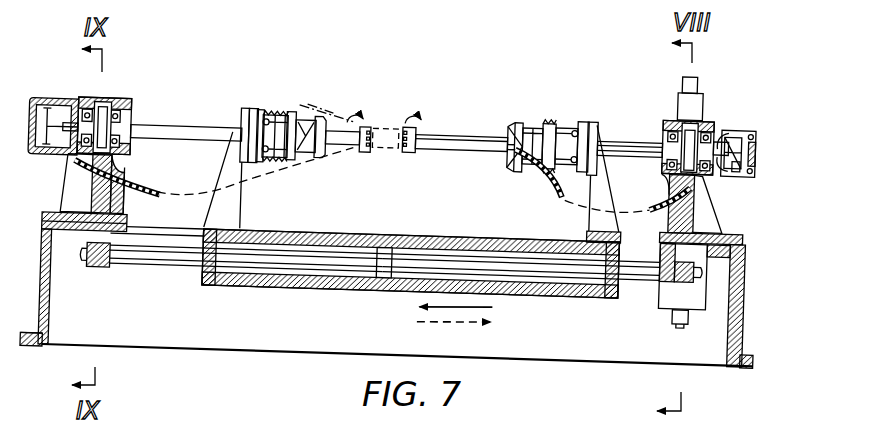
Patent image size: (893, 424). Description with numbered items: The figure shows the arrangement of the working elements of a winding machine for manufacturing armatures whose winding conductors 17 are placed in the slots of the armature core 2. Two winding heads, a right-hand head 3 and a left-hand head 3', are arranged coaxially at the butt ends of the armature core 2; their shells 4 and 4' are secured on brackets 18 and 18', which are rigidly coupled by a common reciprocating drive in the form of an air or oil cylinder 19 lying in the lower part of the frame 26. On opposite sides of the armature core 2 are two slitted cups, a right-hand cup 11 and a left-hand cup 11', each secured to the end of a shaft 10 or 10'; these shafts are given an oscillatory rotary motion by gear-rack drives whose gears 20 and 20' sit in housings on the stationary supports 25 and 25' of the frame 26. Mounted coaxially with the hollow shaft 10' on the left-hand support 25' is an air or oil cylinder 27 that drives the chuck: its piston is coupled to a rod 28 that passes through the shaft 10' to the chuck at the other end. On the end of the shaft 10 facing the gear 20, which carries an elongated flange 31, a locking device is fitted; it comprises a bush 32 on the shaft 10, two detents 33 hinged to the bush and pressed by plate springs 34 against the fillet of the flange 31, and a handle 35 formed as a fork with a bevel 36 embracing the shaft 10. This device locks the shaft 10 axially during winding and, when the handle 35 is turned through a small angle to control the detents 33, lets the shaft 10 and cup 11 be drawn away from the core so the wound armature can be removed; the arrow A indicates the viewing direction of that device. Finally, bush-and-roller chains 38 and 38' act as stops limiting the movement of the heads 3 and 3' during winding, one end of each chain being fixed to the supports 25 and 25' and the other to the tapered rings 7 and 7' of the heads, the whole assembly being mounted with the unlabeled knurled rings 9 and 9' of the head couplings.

The armature core 2 is at (379, 124).
The right-hand head 3 is at (525, 117).
The left-hand head 3' is at (298, 106).
The shell 4 is at (581, 117).
The shell 4' is at (251, 105).
The tapered ring 7 is at (495, 179).
The tapered ring 7' is at (310, 161).
The knurled ring 9 is at (560, 118).
The knurled coupling body 9' is at (275, 105).
The shaft 10 is at (538, 106).
The shaft 10' is at (186, 94).
The right-hand cup 11 is at (412, 168).
The left-hand cup 11' is at (360, 168).
The winding conductors 17 is at (333, 110).
The bracket 18 is at (602, 118).
The bracket 18' is at (230, 105).
The air or oil cylinder 19 is at (327, 275).
The gear 20 is at (678, 121).
The gear 20' is at (118, 100).
The stationary support 25 is at (544, 282).
The left-hand support 25' is at (208, 225).
The frame 26 is at (36, 345).
The air or oil cylinder 27 is at (45, 108).
The rod 28 is at (58, 107).
The elongated flange 31 is at (713, 143).
The bush 32 is at (755, 157).
The detents 33 is at (733, 130).
The plate springs 34 is at (740, 128).
The handle 35 is at (735, 170).
The bevel 36 is at (741, 167).
The bush-and-roller chain 38 is at (595, 183).
The bush-and-roller chain 38' is at (214, 170).
The viewing direction A is at (767, 155).